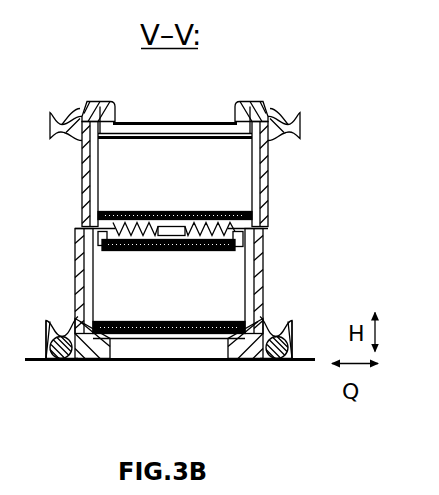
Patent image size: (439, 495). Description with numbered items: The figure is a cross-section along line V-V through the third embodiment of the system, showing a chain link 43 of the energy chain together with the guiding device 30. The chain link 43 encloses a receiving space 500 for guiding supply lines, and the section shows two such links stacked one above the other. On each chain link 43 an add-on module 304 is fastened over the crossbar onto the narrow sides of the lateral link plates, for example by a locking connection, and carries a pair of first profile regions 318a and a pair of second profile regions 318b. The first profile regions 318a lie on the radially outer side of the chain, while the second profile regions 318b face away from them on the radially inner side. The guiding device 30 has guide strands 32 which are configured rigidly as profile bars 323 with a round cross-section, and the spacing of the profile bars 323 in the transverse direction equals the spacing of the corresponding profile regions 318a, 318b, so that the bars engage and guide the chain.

The first profile region 318a is at (67, 107).
The second profile region 318b is at (69, 145).
The chain link 43 is at (72, 193).
The receiving space 500 is at (195, 191).
The add-on module 304 is at (244, 360).
The guide strand 32 is at (58, 363).
The profile bar 323 is at (65, 365).
The guiding device 30 is at (282, 381).